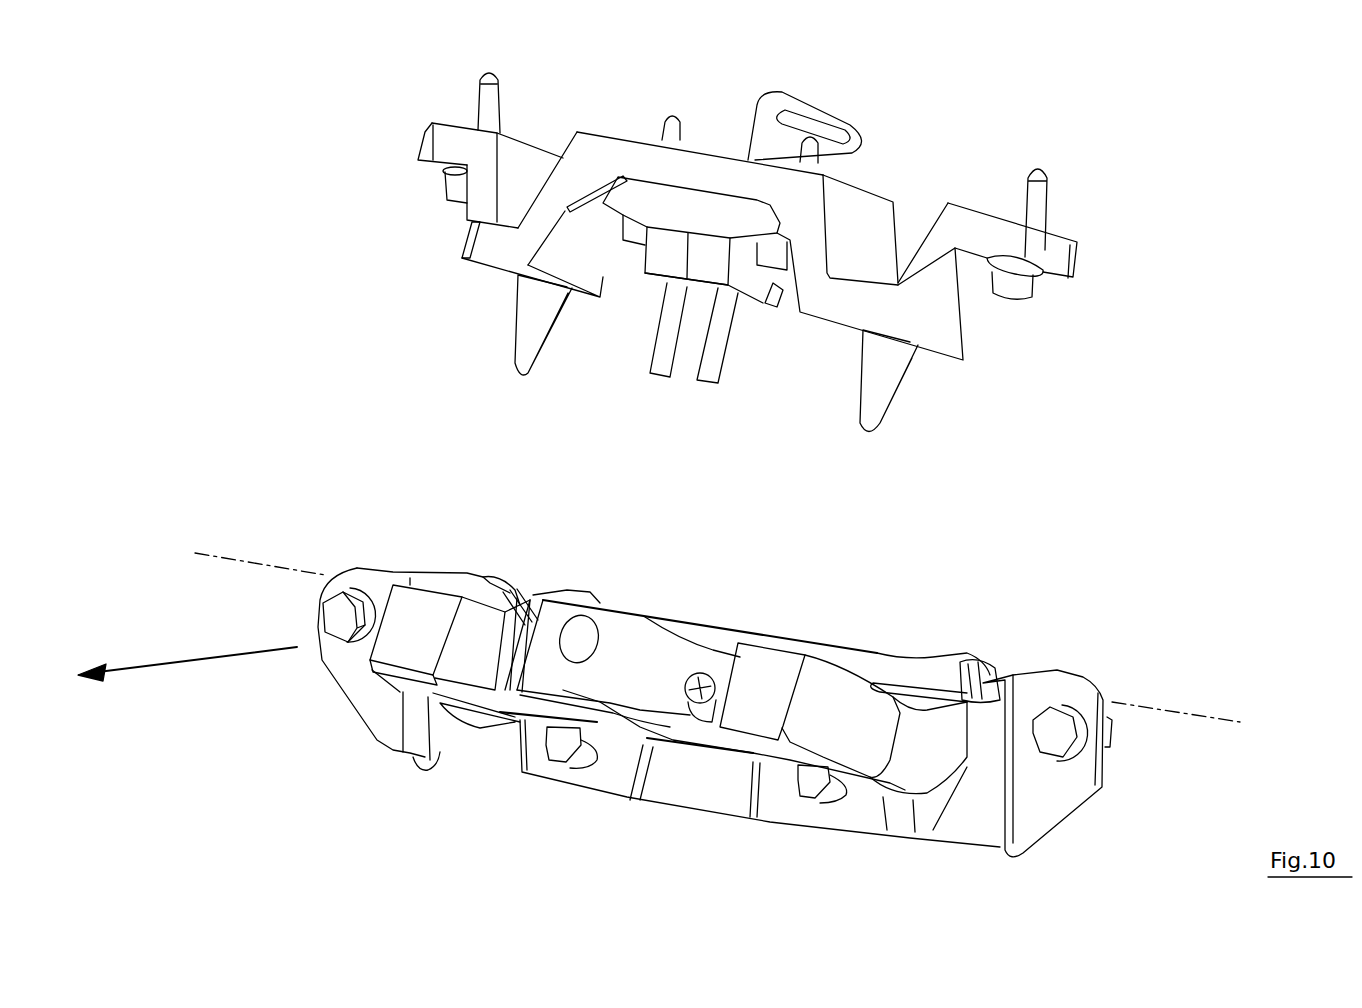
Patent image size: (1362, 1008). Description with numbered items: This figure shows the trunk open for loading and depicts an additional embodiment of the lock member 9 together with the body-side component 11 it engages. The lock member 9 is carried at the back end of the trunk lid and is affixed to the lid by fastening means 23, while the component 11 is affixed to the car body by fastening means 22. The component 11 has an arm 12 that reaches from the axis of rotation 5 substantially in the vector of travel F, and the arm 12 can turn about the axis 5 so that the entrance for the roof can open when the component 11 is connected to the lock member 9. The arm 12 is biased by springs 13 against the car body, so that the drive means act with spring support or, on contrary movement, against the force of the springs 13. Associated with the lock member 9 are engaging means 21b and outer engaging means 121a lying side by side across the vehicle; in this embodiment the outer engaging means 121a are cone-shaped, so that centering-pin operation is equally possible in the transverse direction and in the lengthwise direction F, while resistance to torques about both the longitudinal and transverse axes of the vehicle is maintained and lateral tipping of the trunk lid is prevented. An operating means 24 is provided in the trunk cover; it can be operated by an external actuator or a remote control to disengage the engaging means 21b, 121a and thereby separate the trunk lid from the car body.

The lock member 9 is at (953, 167).
The fastening means 23 is at (488, 112).
The operating means 24 is at (808, 110).
The engaging means 21b is at (665, 340).
The outer engaging means 121a is at (537, 332).
The component 11 is at (707, 586).
The axis of rotation 5 is at (1162, 713).
The vector of travel F is at (202, 657).
The fastening means 22 is at (335, 615).
The springs 13 is at (500, 597).
The arm 12 is at (487, 723).